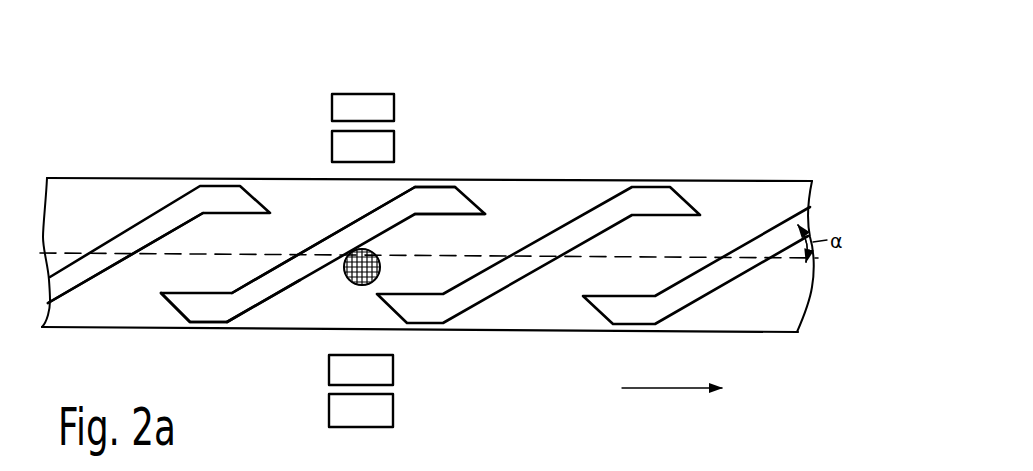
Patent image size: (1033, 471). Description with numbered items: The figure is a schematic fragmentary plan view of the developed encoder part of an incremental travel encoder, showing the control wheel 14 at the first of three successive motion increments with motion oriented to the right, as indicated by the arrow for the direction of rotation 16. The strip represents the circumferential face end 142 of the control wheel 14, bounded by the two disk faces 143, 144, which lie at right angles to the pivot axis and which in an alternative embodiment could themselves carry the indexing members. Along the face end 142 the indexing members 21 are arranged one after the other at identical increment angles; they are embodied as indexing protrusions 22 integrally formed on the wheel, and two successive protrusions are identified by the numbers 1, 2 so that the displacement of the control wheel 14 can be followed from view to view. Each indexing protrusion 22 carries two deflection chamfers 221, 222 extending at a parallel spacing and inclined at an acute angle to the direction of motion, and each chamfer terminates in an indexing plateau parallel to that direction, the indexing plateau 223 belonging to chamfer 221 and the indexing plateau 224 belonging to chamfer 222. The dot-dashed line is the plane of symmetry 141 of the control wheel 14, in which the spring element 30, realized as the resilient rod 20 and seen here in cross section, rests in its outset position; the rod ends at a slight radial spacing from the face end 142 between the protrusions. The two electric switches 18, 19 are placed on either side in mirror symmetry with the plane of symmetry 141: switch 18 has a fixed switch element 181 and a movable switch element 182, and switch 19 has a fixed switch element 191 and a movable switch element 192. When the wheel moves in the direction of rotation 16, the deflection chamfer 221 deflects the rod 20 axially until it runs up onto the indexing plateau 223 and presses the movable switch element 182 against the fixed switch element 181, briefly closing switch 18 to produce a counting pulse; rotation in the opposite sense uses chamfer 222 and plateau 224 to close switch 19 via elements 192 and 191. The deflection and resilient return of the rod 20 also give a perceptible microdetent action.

The indexing protrusion number one 1 is at (323, 166).
The indexing protrusion number two 2 is at (159, 244).
The control wheel 14 is at (93, 177).
The plane of symmetry 141 is at (673, 257).
The circumferential face end 142 is at (703, 205).
The disk face 143 is at (747, 333).
The disk face 144 is at (725, 180).
The direction of rotation 16 is at (663, 387).
The electric switch 18 is at (312, 404).
The fixed switch element 181 is at (333, 421).
The movable switch element 182 is at (330, 365).
The electric switch 19 is at (411, 94).
The fixed switch element 191 is at (338, 100).
The movable switch element 192 is at (340, 152).
The resilient rod 20 is at (380, 276).
The indexing member 21 is at (326, 230).
The indexing protrusion 22 is at (322, 243).
The deflection chamfer 221 is at (283, 291).
The deflection chamfer 222 is at (402, 228).
The indexing plateau 223 is at (197, 326).
The indexing plateau 224 is at (443, 180).
The spring element 30 is at (366, 287).